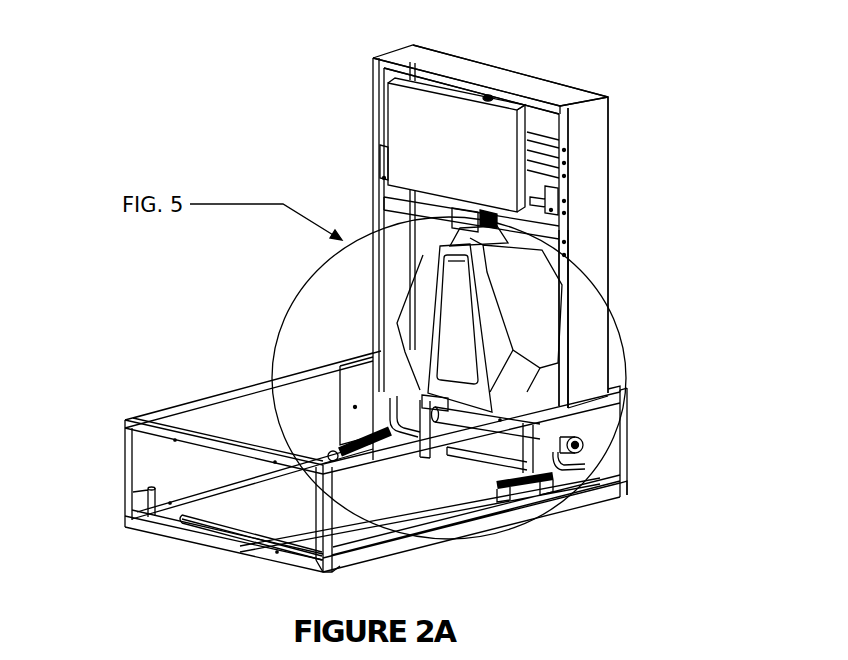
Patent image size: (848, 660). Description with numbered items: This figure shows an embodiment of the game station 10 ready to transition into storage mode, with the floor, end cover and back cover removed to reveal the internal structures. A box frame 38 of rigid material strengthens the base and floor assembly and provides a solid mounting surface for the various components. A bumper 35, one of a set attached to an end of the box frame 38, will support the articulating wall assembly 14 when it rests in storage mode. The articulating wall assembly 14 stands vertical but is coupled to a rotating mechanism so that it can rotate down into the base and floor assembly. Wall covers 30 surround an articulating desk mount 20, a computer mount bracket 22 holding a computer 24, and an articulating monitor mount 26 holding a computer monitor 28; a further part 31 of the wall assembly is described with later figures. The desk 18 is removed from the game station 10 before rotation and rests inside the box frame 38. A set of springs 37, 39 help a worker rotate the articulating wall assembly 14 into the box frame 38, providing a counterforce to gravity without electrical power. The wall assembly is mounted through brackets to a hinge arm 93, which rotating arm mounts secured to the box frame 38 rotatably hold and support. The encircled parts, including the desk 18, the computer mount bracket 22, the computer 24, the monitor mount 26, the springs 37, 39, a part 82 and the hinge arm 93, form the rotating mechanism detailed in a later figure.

The game station 10 is at (116, 108).
The articulating wall assembly 14 is at (733, 490).
The desk 18 is at (388, 528).
The articulating desk mount 20 is at (547, 202).
The computer mount bracket 22 is at (432, 345).
The computer 24 is at (407, 313).
The articulating monitor mount 26 is at (570, 245).
The computer monitor 28 is at (493, 123).
The wall covers 30 is at (588, 125).
The part 31 is at (532, 84).
The bumper 35 is at (133, 492).
The spring 37 is at (550, 473).
The box frame 38 is at (345, 558).
The spring 39 is at (332, 452).
The part 82 is at (380, 205).
The hinge arm 93 is at (307, 556).